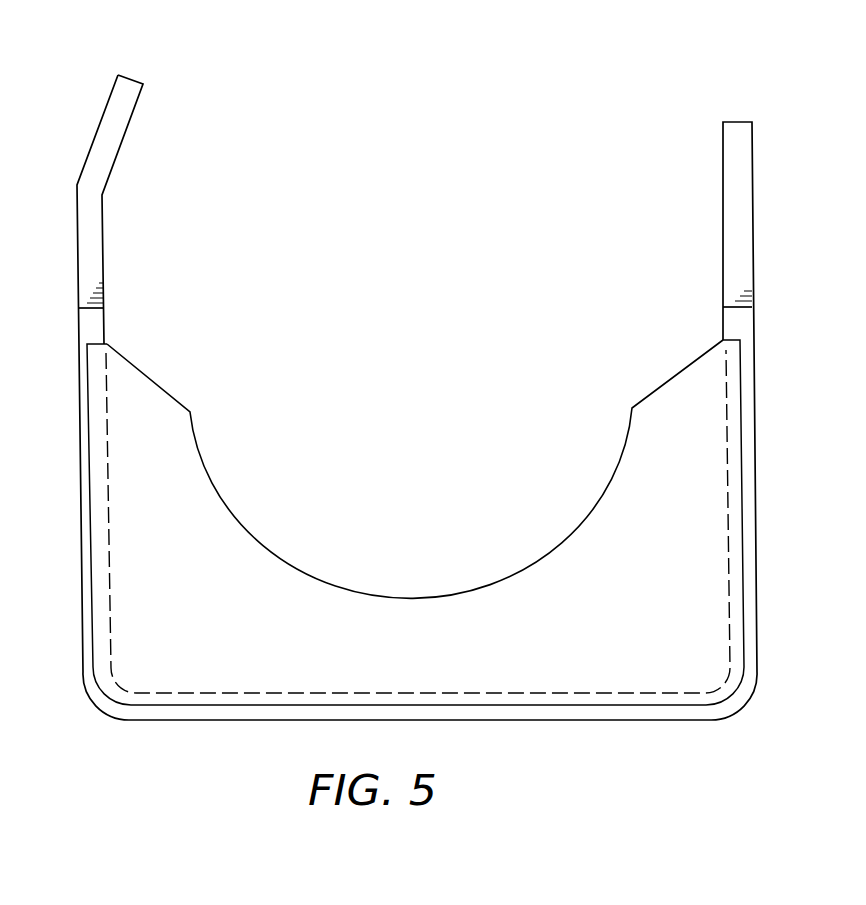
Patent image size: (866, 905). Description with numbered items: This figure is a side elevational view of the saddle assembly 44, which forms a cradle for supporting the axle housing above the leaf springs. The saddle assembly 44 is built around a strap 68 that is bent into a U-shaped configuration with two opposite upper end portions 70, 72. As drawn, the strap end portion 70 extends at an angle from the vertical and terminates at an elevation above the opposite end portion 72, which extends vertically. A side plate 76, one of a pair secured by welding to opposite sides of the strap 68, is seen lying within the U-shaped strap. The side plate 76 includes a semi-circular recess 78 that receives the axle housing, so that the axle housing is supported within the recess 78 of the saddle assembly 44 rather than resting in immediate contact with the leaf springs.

The saddle assembly 44 is at (775, 236).
The strap 68 is at (533, 712).
The strap end portion 70 is at (110, 112).
The strap end portion 72 is at (752, 132).
The side plate 76 is at (122, 540).
The semi-circular recess 78 is at (242, 546).